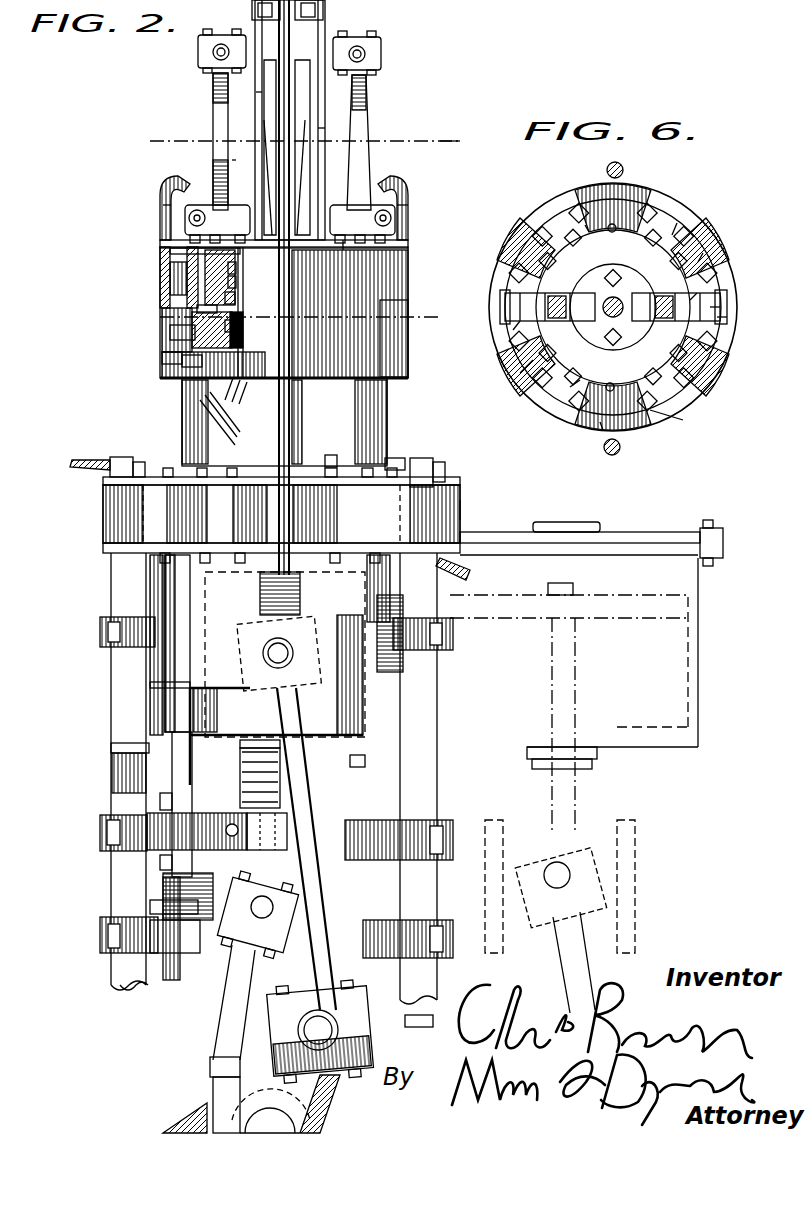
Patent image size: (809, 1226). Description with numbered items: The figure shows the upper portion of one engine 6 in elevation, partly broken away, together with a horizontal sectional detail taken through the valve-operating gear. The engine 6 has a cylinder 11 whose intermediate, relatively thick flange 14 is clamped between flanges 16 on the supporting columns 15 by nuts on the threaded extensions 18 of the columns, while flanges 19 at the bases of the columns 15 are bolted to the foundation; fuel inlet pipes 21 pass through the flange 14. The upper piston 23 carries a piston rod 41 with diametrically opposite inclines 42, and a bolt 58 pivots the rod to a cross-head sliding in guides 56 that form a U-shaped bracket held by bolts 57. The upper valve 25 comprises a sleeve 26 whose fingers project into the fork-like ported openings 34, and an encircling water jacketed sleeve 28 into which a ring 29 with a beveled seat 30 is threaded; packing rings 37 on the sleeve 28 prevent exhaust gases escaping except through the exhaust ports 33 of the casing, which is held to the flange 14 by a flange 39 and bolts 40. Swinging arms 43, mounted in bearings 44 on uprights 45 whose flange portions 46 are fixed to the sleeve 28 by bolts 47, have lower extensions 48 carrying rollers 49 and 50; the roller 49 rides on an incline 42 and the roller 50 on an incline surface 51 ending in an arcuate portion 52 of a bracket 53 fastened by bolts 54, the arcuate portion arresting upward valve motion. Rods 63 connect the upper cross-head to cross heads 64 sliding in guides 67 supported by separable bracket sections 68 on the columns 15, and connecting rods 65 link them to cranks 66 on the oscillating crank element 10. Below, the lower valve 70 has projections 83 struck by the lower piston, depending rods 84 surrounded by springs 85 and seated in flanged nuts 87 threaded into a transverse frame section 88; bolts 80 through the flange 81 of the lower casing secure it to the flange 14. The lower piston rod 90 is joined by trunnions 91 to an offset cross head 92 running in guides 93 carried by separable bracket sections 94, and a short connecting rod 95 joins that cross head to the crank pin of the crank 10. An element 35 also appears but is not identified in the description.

In FIG. 2, the engine 6 is at (200, 141).
In FIG. 2, the oscillating crank element 10 is at (203, 1127).
In FIG. 2, the cylinder 11 is at (372, 424).
In FIG. 2, the flange 14 is at (457, 505).
In FIG. 2, the supporting columns 15 is at (120, 580).
In FIG. 2, the flanges 16 is at (110, 548).
In FIG. 2, the threaded extensions 18 is at (125, 462).
In FIG. 2, the flanges 19 is at (110, 468).
In FIG. 2, the fuel inlet pipes 21 is at (80, 468).
In FIG. 2, the piston 23 is at (400, 318).
In FIG. 6, the piston 23 is at (577, 240).
In FIG. 2, the upper valve 25 is at (236, 266).
In FIG. 2, the sleeve 26 is at (236, 282).
In FIG. 2, the water jacketed sleeve 28 is at (198, 312).
In FIG. 6, the water jacketed sleeve 28 is at (630, 213).
In FIG. 2, the ring 29 is at (240, 330).
In FIG. 2, the beveled seat 30 is at (184, 358).
In FIG. 2, the exhaust ports 33 is at (162, 352).
In FIG. 2, the ported openings 34 is at (240, 330).
In FIG. 2, the cylinder wall 35 is at (212, 290).
In FIG. 2, the packing rings 37 is at (233, 298).
In FIG. 2, the flange 39 is at (400, 462).
In FIG. 2, the bolts 40 is at (335, 440).
In FIG. 2, the piston rod 41 is at (398, 378).
In FIG. 6, the piston rod 41 is at (521, 372).
In FIG. 2, the inclines 42 is at (445, 143).
In FIG. 6, the inclines 42 is at (570, 387).
In FIG. 2, the swinging arms 43 is at (235, 122).
In FIG. 6, the swinging arms 43 is at (697, 293).
In FIG. 2, the bearings 44 is at (205, 60).
In FIG. 2, the uprights 45 is at (232, 160).
In FIG. 6, the flange portions 46 is at (680, 230).
In FIG. 6, the bolts 47 is at (703, 253).
In FIG. 2, the extension 48 is at (165, 268).
In FIG. 6, the extension 48 is at (718, 317).
In FIG. 2, the roller 49 is at (170, 331).
In FIG. 6, the roller 49 is at (612, 262).
In FIG. 2, the roller 50 is at (188, 222).
In FIG. 6, the roller 50 is at (712, 306).
In FIG. 2, the incline surface 51 is at (163, 201).
In FIG. 2, the arcuate portion 52 is at (170, 180).
In FIG. 2, the bracket 53 is at (185, 242).
In FIG. 6, the bracket 53 is at (505, 302).
In FIG. 2, the bolts 54 is at (178, 255).
In FIG. 2, the guides 56 is at (256, 92).
In FIG. 6, the guides 56 is at (586, 226).
In FIG. 2, the bolts 57 is at (342, 242).
In FIG. 6, the bolts 57 is at (677, 223).
In FIG. 2, the bolt 58 is at (326, 6).
In FIG. 2, the rods 63 is at (292, 405).
In FIG. 6, the rods 63 is at (622, 166).
In FIG. 2, the cross heads 64 is at (213, 703).
In FIG. 2, the connecting rods 65 is at (300, 962).
In FIG. 2, the cranks 66 is at (315, 1090).
In FIG. 2, the guides 67 is at (187, 687).
In FIG. 2, the separable bracket sections 68 is at (105, 636).
In FIG. 2, the valve 70 is at (333, 745).
In FIG. 2, the bolts 80 is at (167, 565).
In FIG. 2, the flange 81 is at (197, 562).
In FIG. 2, the projections 83 is at (187, 763).
In FIG. 2, the depending rods 84 is at (240, 777).
In FIG. 2, the springs 85 is at (245, 783).
In FIG. 2, the flanged nuts 87 is at (240, 808).
In FIG. 2, the frame section 88 is at (333, 838).
In FIG. 2, the piston rod 90 is at (322, 823).
In FIG. 2, the trunnions 91 is at (163, 886).
In FIG. 2, the cross head 92 is at (163, 905).
In FIG. 2, the guides 93 is at (138, 995).
In FIG. 2, the separable bracket sections 94 is at (143, 931).
In FIG. 2, the connecting rod 95 is at (222, 1003).